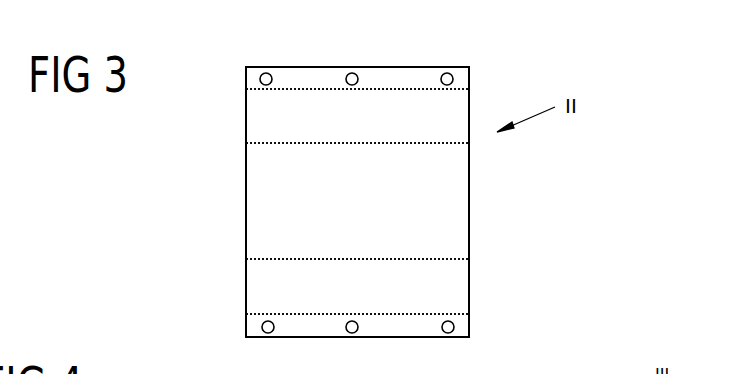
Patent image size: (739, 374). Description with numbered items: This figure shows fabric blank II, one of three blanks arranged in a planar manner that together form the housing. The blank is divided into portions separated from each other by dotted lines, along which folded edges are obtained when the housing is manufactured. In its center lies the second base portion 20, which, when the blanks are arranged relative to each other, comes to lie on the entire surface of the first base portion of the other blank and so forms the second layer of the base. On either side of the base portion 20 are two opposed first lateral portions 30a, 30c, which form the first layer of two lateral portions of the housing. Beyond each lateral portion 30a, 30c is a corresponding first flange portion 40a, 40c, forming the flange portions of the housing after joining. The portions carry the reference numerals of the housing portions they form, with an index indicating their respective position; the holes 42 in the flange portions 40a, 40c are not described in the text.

The base portion 20 is at (375, 213).
The lateral portion 30a is at (377, 125).
The lateral portion 30c is at (380, 301).
The flange portion 40a is at (302, 78).
The flange portion 40c is at (312, 328).
The fastening hole 42 is at (450, 65).